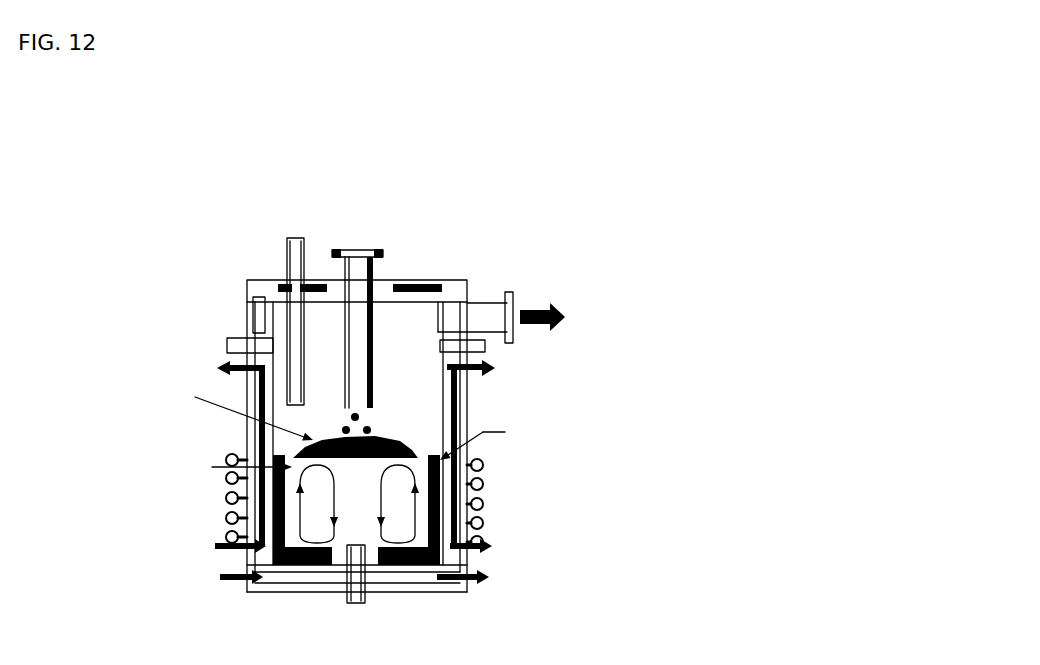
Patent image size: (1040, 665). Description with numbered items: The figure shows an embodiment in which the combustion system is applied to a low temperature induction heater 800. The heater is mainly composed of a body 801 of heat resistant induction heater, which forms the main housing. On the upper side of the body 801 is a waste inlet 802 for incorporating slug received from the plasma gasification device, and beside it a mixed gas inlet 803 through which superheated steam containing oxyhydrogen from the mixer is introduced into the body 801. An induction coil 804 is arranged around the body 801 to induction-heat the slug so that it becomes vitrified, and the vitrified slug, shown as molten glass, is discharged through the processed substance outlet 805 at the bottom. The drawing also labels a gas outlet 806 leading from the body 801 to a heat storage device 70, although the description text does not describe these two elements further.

The low temperature induction heater 800 is at (438, 359).
The body of heat resistant induction heater 801 is at (467, 398).
The waste inlet 802 is at (363, 236).
The mixed gas inlet 803 is at (278, 232).
The induction coil 804 is at (496, 473).
The processed substance outlet 805 is at (400, 592).
The gas outlet 806 is at (564, 317).
The heat storage device 70 is at (647, 317).